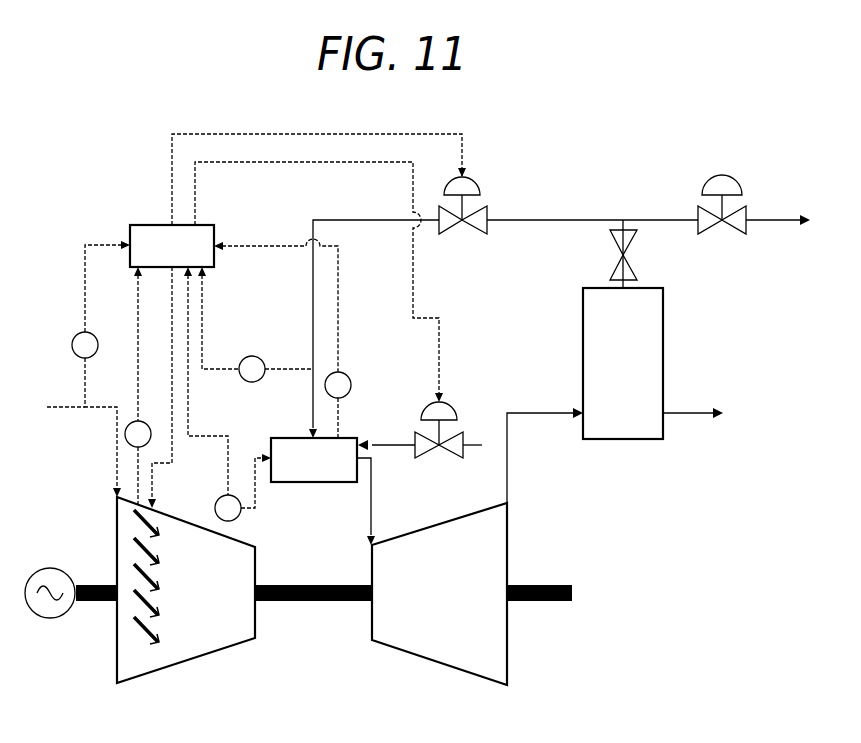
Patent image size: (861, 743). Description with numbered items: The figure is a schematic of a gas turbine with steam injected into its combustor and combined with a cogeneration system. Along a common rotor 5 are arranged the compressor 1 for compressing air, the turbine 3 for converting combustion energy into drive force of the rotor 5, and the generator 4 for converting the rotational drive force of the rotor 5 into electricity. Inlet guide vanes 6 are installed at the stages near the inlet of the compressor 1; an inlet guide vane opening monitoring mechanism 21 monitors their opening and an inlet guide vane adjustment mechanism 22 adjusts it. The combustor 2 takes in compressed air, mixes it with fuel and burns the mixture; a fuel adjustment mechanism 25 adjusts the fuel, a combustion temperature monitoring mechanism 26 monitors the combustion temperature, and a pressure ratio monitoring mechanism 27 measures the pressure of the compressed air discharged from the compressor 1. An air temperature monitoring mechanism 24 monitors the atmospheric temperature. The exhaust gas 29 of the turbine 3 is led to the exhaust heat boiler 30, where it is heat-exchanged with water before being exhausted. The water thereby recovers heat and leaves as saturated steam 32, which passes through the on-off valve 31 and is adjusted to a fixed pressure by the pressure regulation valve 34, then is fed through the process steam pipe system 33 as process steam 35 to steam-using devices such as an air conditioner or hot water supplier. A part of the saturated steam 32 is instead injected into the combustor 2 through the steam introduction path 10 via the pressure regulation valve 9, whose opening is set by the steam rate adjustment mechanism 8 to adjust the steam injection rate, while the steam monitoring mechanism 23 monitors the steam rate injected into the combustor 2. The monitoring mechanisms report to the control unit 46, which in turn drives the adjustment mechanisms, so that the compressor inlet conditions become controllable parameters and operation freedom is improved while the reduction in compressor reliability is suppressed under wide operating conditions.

The compressor 1 is at (213, 640).
The combustor 2 is at (359, 437).
The turbine 3 is at (438, 645).
The generator 4 is at (50, 568).
The rotor 5 is at (325, 603).
The inlet guide vanes 6 is at (136, 650).
The steam rate adjustment mechanism 8 is at (468, 143).
The pressure regulation valve 9 is at (489, 211).
The steam introduction path 10 is at (362, 218).
The inlet guide vane opening monitoring mechanism 21 is at (130, 421).
The inlet guide vane adjustment mechanism 22 is at (157, 482).
The steam monitoring mechanism 23 is at (256, 356).
The air temperature monitoring mechanism 24 is at (75, 336).
The fuel adjustment mechanism 25 is at (450, 406).
The combustion temperature monitoring mechanism 26 is at (352, 380).
The pressure ratio monitoring mechanism 27 is at (214, 508).
The exhaust gas 29 is at (527, 413).
The exhaust heat boiler 30 is at (632, 430).
The on-off valve 31 is at (610, 251).
The saturated steam 32 is at (656, 218).
The process steam pipe system 33 is at (766, 220).
The pressure regulation valve 34 is at (729, 177).
The process steam 35 is at (821, 222).
The control unit 46 is at (160, 261).